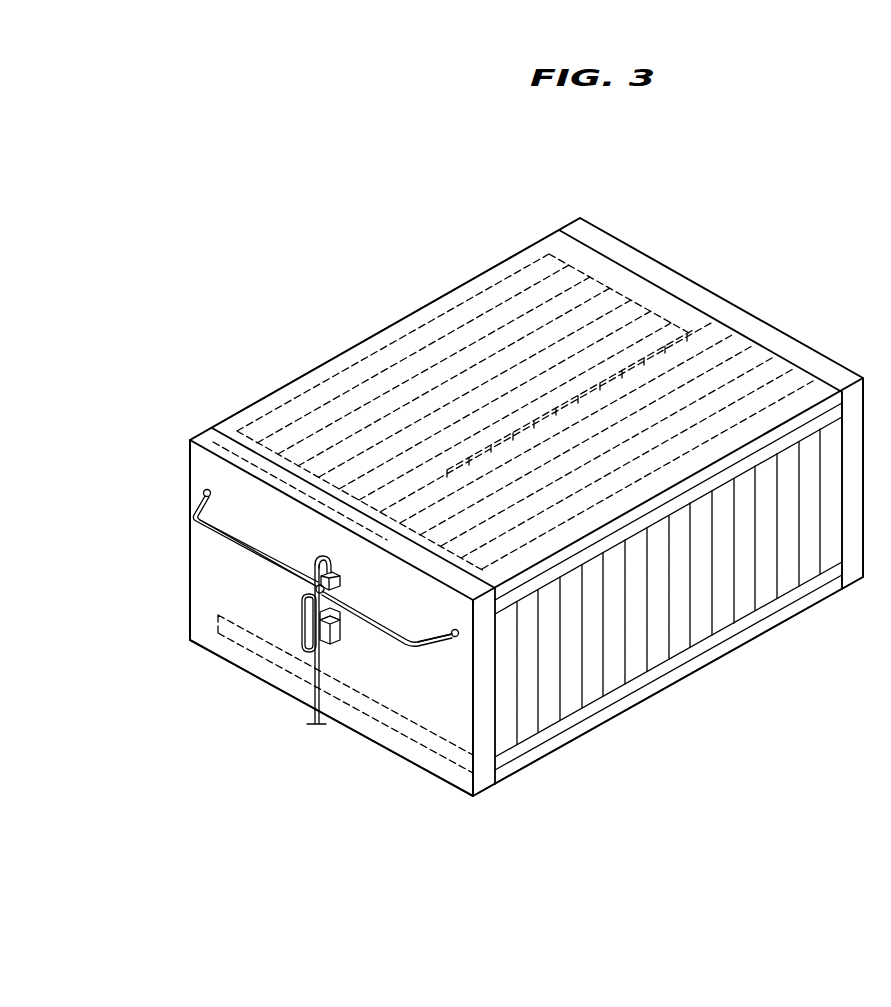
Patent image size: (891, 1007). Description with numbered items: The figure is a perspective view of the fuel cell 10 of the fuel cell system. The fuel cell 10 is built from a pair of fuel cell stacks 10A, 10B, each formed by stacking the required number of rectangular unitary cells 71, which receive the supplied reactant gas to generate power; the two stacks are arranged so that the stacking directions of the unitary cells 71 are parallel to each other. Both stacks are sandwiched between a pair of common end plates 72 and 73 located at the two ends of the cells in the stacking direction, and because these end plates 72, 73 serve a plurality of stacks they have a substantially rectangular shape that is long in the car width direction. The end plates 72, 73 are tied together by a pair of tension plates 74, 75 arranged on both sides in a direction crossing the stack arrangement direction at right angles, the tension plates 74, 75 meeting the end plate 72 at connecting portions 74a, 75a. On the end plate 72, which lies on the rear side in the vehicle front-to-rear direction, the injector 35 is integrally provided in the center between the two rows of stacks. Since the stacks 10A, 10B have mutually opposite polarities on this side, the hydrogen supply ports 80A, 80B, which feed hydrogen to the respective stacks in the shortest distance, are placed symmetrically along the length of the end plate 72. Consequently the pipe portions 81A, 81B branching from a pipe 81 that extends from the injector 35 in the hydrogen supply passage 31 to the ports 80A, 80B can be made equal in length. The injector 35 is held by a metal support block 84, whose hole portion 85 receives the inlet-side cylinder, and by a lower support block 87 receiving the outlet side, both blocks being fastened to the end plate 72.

The fuel cell 10 is at (508, 225).
The fuel cell stack 10A is at (694, 660).
The fuel cell stack 10B is at (406, 320).
The unitary cell 71 is at (470, 310).
The end plate 72 is at (207, 645).
The end plate 73 is at (640, 262).
The tension plate 74 is at (795, 375).
The connecting portion 74a is at (212, 448).
The tension plate 75 is at (825, 592).
The connecting portion 75a is at (443, 757).
The hydrogen supply port 80A is at (446, 642).
The hydrogen supply port 80B is at (204, 495).
The pipe portion 81A is at (458, 640).
The pipe portion 81B is at (232, 546).
The pipe 81 is at (303, 640).
The support block 84 is at (338, 566).
The hole portion 85 is at (341, 578).
The support block 87 is at (338, 644).
The hydrogen supply passage 31 is at (310, 692).
The injector 35 is at (353, 640).